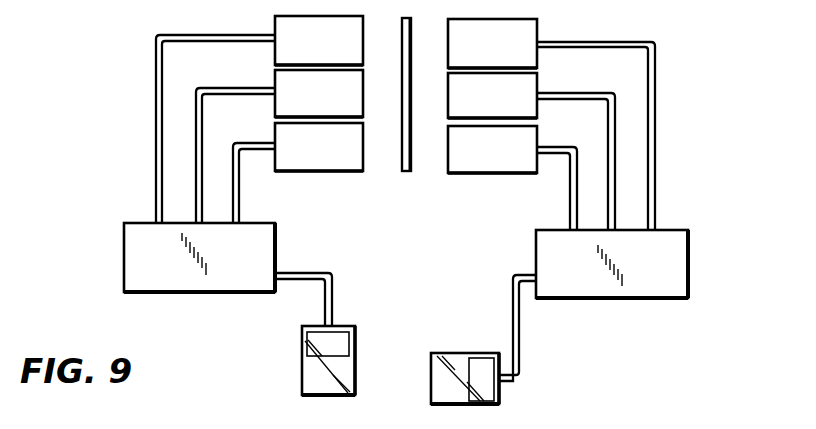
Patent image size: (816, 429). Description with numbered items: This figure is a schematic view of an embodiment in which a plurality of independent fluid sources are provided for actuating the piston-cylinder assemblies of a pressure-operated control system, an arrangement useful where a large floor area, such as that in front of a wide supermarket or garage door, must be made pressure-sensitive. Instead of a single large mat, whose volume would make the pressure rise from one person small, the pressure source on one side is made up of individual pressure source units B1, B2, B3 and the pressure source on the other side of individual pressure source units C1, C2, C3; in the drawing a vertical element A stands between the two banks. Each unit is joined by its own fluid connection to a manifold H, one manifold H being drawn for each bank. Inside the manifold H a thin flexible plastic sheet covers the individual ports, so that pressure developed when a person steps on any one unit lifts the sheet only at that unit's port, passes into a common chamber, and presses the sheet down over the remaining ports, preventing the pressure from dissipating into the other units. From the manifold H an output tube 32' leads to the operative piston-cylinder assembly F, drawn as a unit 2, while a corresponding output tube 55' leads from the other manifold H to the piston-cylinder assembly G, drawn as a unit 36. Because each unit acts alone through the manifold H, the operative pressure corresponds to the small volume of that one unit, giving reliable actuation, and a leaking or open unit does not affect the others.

The output tube 32' is at (325, 286).
The conductor from H to unit 36 55' is at (498, 324).
The unit of assembly F 2 is at (356, 369).
The unit of assembly G 36 is at (471, 408).
The partition / barrier A is at (404, 174).
The manifold H is at (124, 252).
The piston-cylinder assembly F is at (290, 325).
The piston-cylinder assembly G is at (497, 342).
The pressure source unit B1 is at (319, 40).
The pressure source unit B2 is at (319, 93).
The pressure source unit B3 is at (319, 147).
The pressure source unit C1 is at (492, 43).
The pressure source unit C2 is at (492, 95).
The pressure source unit C3 is at (492, 149).